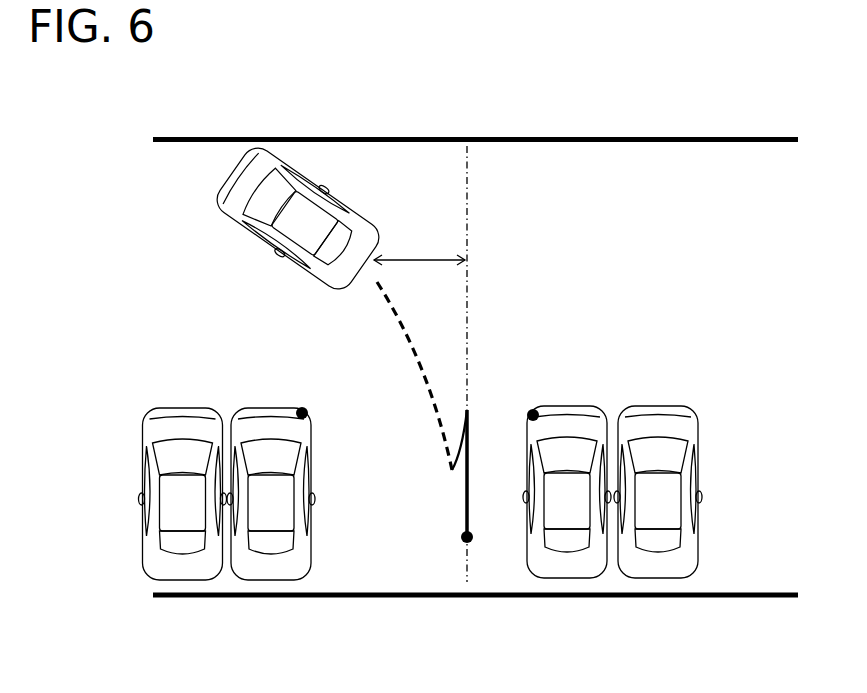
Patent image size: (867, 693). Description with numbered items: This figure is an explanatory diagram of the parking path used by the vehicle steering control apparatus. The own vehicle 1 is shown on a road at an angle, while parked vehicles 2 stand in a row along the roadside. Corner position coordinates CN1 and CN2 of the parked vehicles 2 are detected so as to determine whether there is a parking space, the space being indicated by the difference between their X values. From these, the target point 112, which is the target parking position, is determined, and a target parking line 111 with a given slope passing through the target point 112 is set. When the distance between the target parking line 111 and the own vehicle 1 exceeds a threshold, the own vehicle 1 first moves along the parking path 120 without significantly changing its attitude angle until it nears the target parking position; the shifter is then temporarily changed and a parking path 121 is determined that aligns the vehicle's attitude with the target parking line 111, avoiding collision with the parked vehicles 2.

The own vehicle 1 is at (222, 219).
The parked vehicles 2 is at (297, 577).
The target parking line 111 is at (467, 227).
The target point 112 is at (467, 566).
The parking path 120 is at (396, 316).
The parking path 121 is at (469, 410).
The corner position coordinate CN1 is at (536, 400).
The corner position coordinate CN2 is at (301, 398).